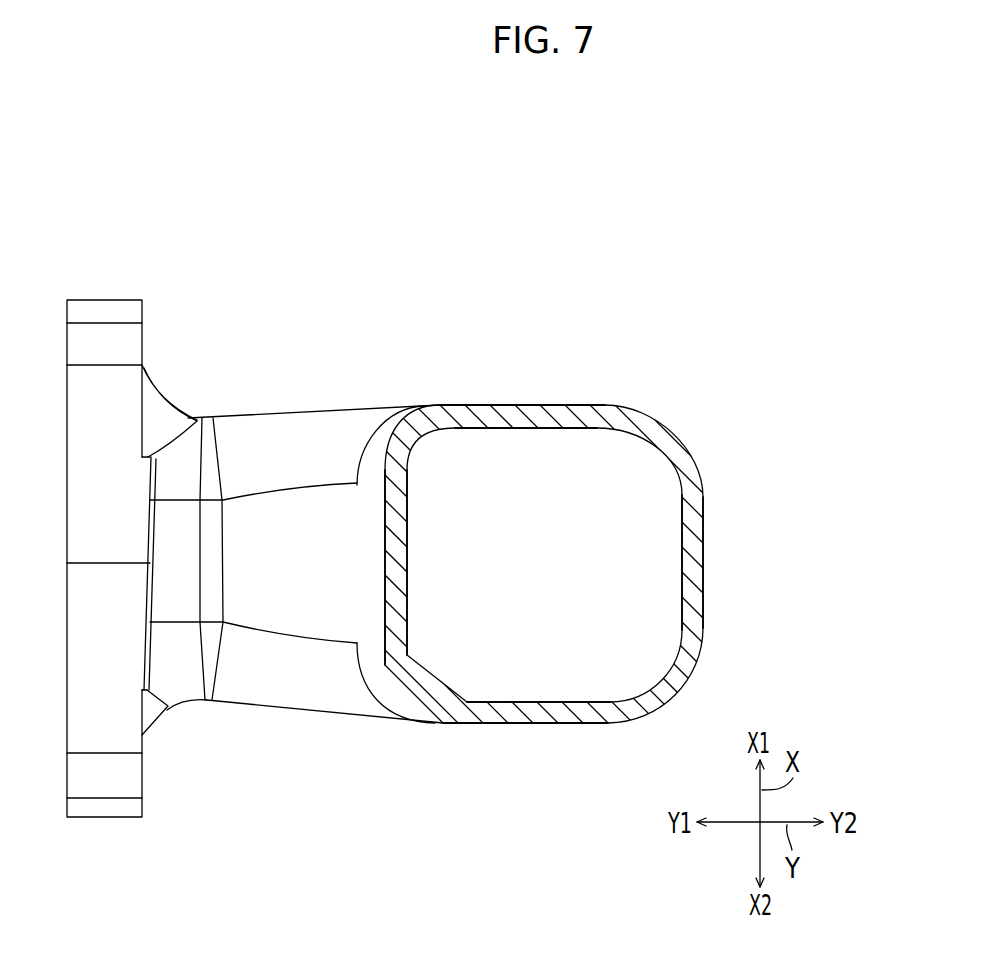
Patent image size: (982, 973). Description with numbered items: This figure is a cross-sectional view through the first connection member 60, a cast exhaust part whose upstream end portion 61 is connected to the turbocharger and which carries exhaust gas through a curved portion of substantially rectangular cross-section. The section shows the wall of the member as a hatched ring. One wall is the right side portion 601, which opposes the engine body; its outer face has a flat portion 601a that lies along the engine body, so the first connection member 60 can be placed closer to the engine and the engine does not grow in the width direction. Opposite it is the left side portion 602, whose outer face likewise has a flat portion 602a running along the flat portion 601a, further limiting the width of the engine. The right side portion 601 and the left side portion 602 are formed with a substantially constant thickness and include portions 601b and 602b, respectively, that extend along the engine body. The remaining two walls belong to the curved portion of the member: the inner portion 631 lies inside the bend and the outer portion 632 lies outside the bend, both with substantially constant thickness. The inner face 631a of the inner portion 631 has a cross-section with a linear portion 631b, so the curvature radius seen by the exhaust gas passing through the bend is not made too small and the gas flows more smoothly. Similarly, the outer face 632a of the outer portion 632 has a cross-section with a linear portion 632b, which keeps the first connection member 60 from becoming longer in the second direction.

The first connection member 60 is at (672, 355).
The upstream end portion 61 is at (173, 460).
The right side portion 601 is at (500, 724).
The flat portion 601a is at (568, 724).
The portion along the engine body 601b is at (598, 697).
The left side portion 602 is at (503, 420).
The flat portion 602a is at (568, 405).
The portion along the engine body 602b is at (595, 433).
The inner portion 631 is at (388, 573).
The inner face 631a is at (385, 608).
The linear portion 631b is at (410, 566).
The outer portion 632 is at (688, 553).
The outer face 632a is at (704, 592).
The linear portion 632b is at (705, 565).